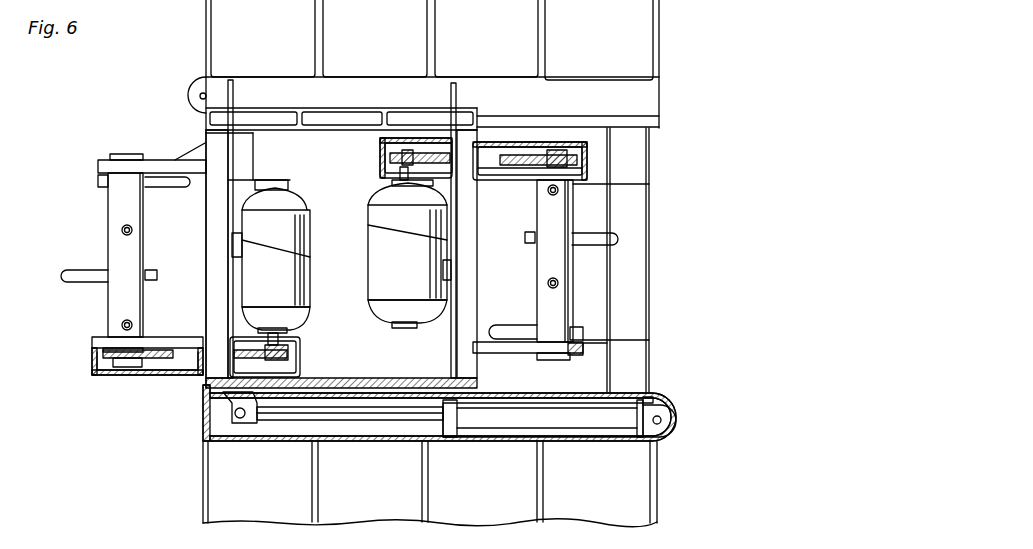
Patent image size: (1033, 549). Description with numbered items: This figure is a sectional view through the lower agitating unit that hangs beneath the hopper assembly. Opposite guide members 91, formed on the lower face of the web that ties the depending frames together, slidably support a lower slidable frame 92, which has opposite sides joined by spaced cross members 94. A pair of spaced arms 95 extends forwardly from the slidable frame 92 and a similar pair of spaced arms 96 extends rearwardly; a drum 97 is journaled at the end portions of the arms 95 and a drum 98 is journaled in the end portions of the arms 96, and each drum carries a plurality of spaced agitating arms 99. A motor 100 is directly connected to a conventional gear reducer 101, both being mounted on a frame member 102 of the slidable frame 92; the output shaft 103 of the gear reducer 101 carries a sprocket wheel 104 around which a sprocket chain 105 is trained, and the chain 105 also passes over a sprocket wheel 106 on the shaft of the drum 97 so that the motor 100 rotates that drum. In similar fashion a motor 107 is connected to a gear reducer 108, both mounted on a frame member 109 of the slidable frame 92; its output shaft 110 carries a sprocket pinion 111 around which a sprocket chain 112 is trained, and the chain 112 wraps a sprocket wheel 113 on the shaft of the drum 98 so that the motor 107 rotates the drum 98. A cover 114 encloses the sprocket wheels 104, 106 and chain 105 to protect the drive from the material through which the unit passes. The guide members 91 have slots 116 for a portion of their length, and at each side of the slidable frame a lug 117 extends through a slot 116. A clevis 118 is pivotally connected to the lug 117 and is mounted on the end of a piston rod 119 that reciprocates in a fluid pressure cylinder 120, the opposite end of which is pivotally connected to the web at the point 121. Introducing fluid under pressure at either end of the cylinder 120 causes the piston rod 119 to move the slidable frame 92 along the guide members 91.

The guide member 91 is at (548, 393).
The lower slidable frame 92 is at (196, 238).
The cross member 94 is at (207, 271).
The spaced arm 95 is at (160, 160).
The spaced arm 96 is at (510, 176).
The drum 97 is at (108, 233).
The drum 98 is at (562, 217).
The agitating arm 99 is at (92, 283).
The motor 100 is at (297, 198).
The gear reducer 101 is at (300, 317).
The frame member 102 is at (233, 195).
The output shaft 103 is at (300, 343).
The sprocket wheel 104 is at (300, 367).
The sprocket chain 105 is at (173, 380).
The sprocket wheel 106 is at (110, 376).
The motor 107 is at (382, 314).
The gear reducer 108 is at (373, 194).
The frame member 109 is at (448, 332).
The output shaft 110 is at (382, 170).
The sprocket pinion 111 is at (417, 153).
The sprocket chain 112 is at (512, 150).
The sprocket wheel 113 is at (563, 148).
The cover 114 is at (152, 370).
The slot 116 is at (392, 373).
The lug 117 is at (233, 399).
The clevis 118 is at (252, 414).
The piston rod 119 is at (363, 423).
The fluid pressure cylinder 120 is at (505, 426).
The pivotal connection 121 is at (672, 410).